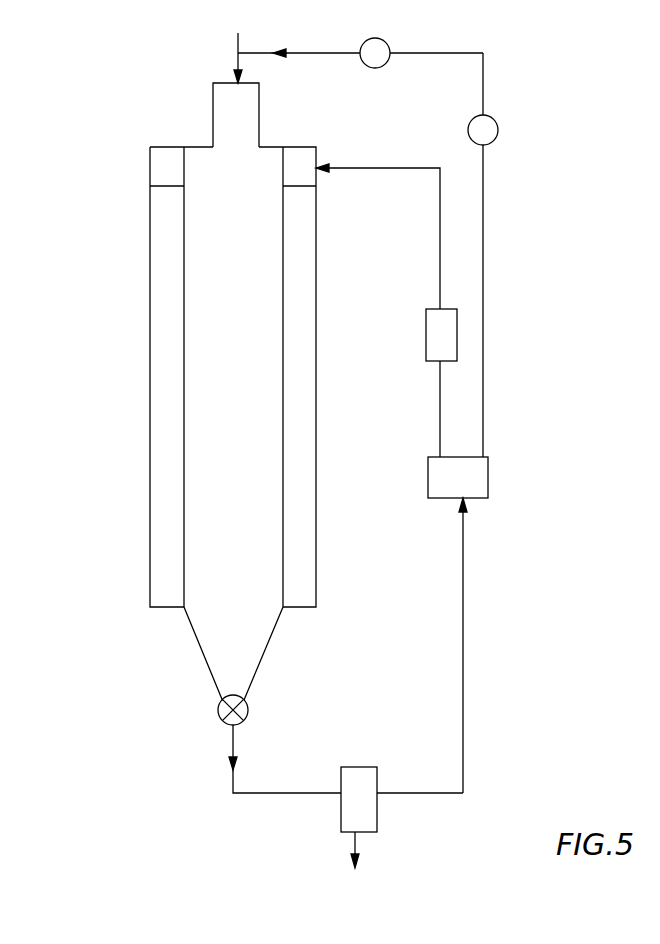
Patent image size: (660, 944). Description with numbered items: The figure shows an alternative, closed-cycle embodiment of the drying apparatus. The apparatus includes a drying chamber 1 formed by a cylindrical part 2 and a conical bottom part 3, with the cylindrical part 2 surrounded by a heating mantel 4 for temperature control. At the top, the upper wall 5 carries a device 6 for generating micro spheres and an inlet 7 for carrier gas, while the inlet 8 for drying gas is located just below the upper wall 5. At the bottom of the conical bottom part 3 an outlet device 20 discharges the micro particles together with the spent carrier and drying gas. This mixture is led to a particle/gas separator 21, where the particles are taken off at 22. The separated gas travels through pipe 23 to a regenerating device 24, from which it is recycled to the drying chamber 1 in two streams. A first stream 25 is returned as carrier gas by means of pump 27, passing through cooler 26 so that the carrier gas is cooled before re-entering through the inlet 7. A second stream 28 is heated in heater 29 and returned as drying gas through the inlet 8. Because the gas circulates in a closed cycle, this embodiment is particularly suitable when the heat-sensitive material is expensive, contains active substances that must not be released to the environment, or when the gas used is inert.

The drying chamber 1 is at (204, 381).
The cylindrical part 2 is at (183, 287).
The conical bottom part 3 is at (200, 658).
The heating mantel 4 is at (302, 447).
The upper wall 5 is at (236, 80).
The device for generating micro spheres 6 is at (240, 42).
The inlet for carrier gas 7 is at (322, 52).
The inlet for drying gas 8 is at (318, 153).
The outlet device 20 is at (250, 707).
The particle/gas separator 21 is at (378, 805).
The particle take-off 22 is at (358, 840).
The pipe 23 is at (465, 620).
The regenerating device 24 is at (490, 478).
The first stream 25 is at (484, 262).
The cooler 26 is at (498, 128).
The pump 27 is at (388, 45).
The second stream 28 is at (440, 405).
The heater 29 is at (425, 322).